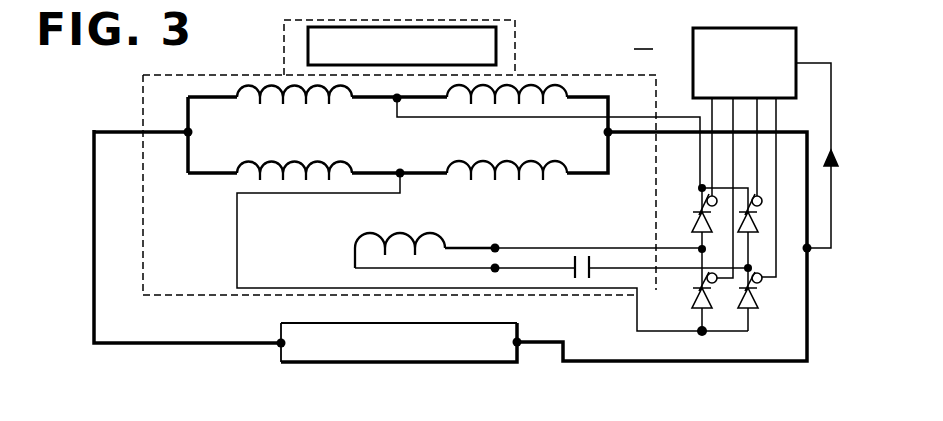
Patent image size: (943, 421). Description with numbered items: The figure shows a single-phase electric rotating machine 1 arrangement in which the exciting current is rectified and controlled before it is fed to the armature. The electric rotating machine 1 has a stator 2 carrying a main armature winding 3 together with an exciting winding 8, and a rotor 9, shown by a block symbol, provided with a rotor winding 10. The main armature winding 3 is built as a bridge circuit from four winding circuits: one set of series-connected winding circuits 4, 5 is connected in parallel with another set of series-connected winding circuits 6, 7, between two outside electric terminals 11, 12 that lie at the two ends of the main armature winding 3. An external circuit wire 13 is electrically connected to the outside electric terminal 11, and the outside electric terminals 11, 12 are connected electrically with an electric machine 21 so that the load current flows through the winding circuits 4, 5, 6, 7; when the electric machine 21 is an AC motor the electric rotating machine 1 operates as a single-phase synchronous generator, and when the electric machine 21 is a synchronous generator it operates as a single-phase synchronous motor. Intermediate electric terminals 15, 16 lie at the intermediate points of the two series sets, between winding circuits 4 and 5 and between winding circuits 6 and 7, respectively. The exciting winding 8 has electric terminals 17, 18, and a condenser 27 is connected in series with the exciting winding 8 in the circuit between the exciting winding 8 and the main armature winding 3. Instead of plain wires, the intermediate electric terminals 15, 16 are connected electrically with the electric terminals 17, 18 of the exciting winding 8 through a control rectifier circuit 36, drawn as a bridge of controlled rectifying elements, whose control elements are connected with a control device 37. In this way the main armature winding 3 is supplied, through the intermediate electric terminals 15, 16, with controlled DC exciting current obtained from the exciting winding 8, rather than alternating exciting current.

The electric rotating machine 1 is at (643, 39).
The stator 2 is at (657, 177).
The main armature winding 3 is at (388, 156).
The winding circuit 4 is at (283, 101).
The winding circuit 5 is at (570, 90).
The winding circuit 6 is at (275, 161).
The winding circuit 7 is at (535, 163).
The exciting winding 8 is at (380, 235).
The rotor 9 is at (516, 45).
The rotor winding 10 is at (497, 38).
The outside electric terminal 11 is at (186, 135).
The outside electric terminal 12 is at (611, 136).
The external circuit wire 13 is at (129, 133).
The intermediate electric terminal 15 is at (395, 100).
The intermediate electric terminal 16 is at (403, 176).
The electric terminal for exciting winding 17 is at (496, 247).
The electric terminal for exciting winding 18 is at (492, 266).
The electric machine 21 is at (281, 363).
The condenser 27 is at (591, 276).
The control rectifier circuit 36 is at (714, 260).
The control device 37 is at (765, 153).